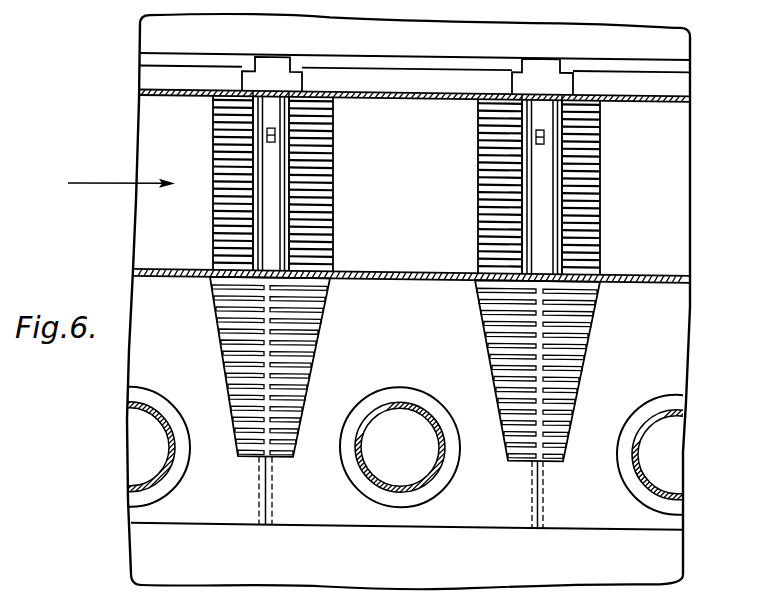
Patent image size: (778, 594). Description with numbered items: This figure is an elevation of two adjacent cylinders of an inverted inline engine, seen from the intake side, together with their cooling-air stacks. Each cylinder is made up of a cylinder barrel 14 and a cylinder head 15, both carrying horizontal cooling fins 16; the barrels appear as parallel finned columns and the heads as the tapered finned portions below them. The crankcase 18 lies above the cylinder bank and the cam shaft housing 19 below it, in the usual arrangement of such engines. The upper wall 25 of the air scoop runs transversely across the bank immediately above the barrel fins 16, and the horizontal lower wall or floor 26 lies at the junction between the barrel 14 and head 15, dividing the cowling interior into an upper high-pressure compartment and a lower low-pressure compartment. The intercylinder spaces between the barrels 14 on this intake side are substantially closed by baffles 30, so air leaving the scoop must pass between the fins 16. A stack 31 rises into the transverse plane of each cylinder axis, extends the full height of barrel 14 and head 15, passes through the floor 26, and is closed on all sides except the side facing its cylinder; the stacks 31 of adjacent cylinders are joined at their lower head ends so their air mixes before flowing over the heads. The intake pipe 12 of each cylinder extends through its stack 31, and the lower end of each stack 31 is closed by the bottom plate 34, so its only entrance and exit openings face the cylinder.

The intake pipe 12 is at (430, 484).
The cylinder barrel 14 is at (323, 176).
The cylinder head 15 is at (310, 350).
The cooling fins 16 is at (332, 190).
The crankcase 18 is at (670, 40).
The cam shaft housing 19 is at (667, 566).
The upper wall 25 is at (670, 89).
The lower wall or floor 26 is at (660, 256).
The baffle 30 is at (270, 102).
The stack 31 is at (158, 122).
The bottom plate 34 is at (645, 526).